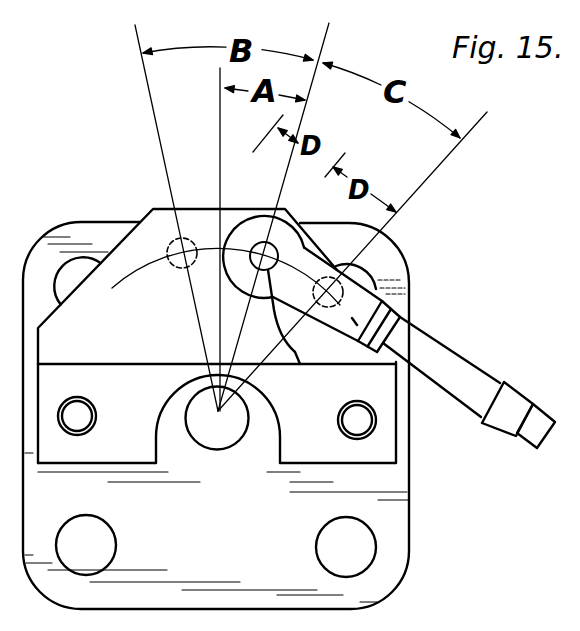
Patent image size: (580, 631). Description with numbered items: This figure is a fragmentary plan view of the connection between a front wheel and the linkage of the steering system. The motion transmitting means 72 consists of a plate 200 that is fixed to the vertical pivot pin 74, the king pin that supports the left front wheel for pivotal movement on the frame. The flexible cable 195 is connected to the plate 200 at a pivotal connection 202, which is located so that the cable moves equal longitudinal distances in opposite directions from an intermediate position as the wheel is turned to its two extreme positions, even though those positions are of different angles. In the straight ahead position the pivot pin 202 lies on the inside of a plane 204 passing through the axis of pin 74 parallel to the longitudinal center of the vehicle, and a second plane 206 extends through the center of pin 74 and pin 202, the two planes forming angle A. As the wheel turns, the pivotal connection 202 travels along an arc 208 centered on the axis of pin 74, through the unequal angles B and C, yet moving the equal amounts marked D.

The motion transmitting means 72 is at (107, 200).
The vertical pivot pin 74 is at (220, 437).
The flexible cable 195 is at (452, 372).
The plate 200 is at (145, 398).
The pivotal connection 202 is at (172, 266).
The plane 204 is at (219, 110).
The second plane 206 is at (327, 50).
The arc 208 is at (207, 250).